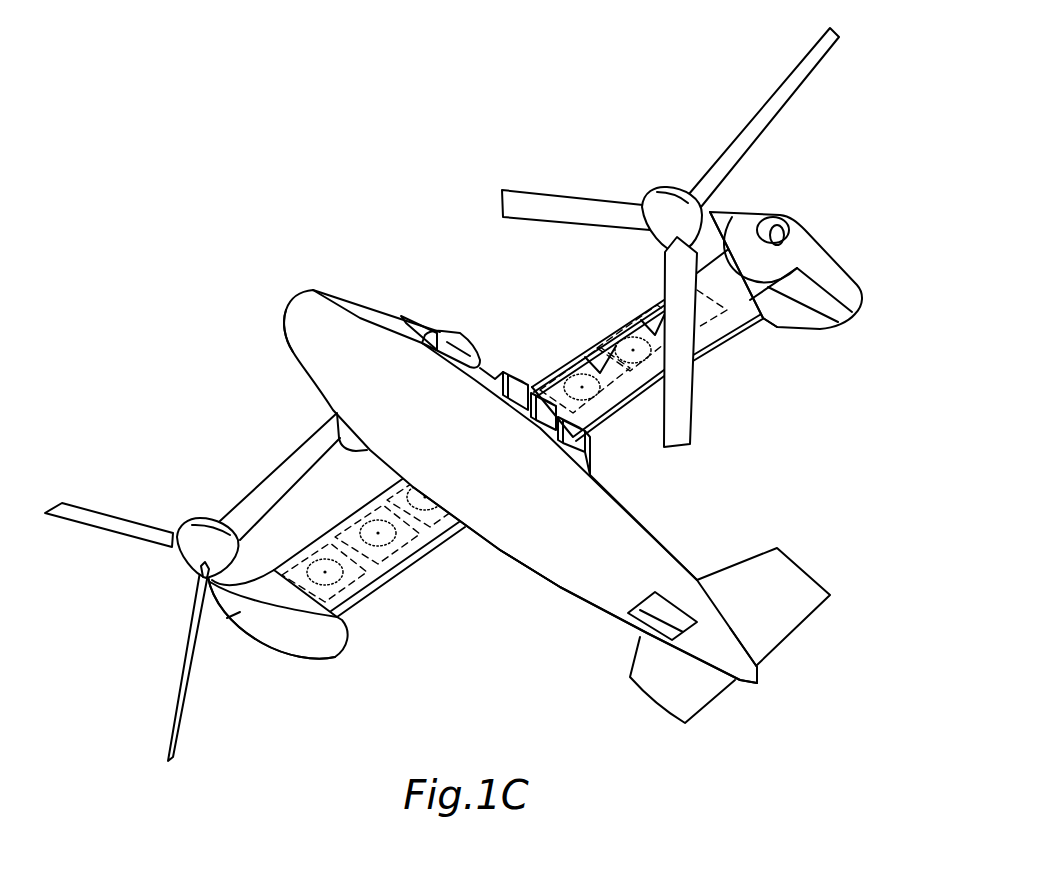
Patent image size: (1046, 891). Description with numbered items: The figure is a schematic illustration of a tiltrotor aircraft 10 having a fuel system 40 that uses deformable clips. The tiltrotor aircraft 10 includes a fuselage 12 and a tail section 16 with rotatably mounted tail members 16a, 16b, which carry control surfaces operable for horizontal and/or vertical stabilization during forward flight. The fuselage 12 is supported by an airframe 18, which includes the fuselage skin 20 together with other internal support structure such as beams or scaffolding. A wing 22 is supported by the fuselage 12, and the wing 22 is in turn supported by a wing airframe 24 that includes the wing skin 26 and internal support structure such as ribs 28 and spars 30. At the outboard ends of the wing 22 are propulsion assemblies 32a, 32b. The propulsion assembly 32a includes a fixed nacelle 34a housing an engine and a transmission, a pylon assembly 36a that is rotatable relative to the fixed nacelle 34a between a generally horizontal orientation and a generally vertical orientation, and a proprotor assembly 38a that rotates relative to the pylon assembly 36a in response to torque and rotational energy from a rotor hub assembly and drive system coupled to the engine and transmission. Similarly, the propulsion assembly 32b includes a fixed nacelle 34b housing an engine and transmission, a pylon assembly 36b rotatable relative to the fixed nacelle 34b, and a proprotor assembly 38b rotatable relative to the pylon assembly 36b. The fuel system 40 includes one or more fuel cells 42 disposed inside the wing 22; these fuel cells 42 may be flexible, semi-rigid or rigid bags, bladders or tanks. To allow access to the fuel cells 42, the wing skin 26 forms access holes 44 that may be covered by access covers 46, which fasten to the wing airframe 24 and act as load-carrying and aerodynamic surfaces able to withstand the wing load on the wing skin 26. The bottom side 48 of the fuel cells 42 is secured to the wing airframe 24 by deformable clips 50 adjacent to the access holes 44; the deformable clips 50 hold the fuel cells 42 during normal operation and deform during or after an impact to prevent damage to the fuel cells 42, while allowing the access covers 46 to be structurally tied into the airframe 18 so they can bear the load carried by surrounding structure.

The tiltrotor aircraft 10 is at (425, 191).
The fuselage 12 is at (312, 302).
The tail section 16 is at (727, 693).
The tail member 16a is at (800, 617).
The tail member 16b is at (670, 717).
The airframe 18 is at (500, 552).
The fuselage skin 20 is at (560, 584).
The wing 22 is at (402, 575).
The wing airframe 24 is at (368, 597).
The wing skin 26 is at (646, 320).
The ribs 28 is at (596, 350).
The spars 30 is at (572, 361).
The propulsion assembly 32a is at (768, 325).
The propulsion assembly 32b is at (277, 652).
The fixed nacelle 34a is at (820, 331).
The fixed nacelle 34b is at (333, 654).
The pylon assembly 36a is at (703, 207).
The pylon assembly 36b is at (268, 540).
The proprotor assembly 38a is at (763, 111).
The proprotor assembly 38b is at (110, 512).
The fuel system 40 is at (573, 345).
The fuel cells 42 is at (610, 343).
The access holes 44 is at (578, 405).
The access covers 46 is at (588, 392).
The bottom side 48 is at (640, 365).
The deformable clips 50 is at (627, 342).